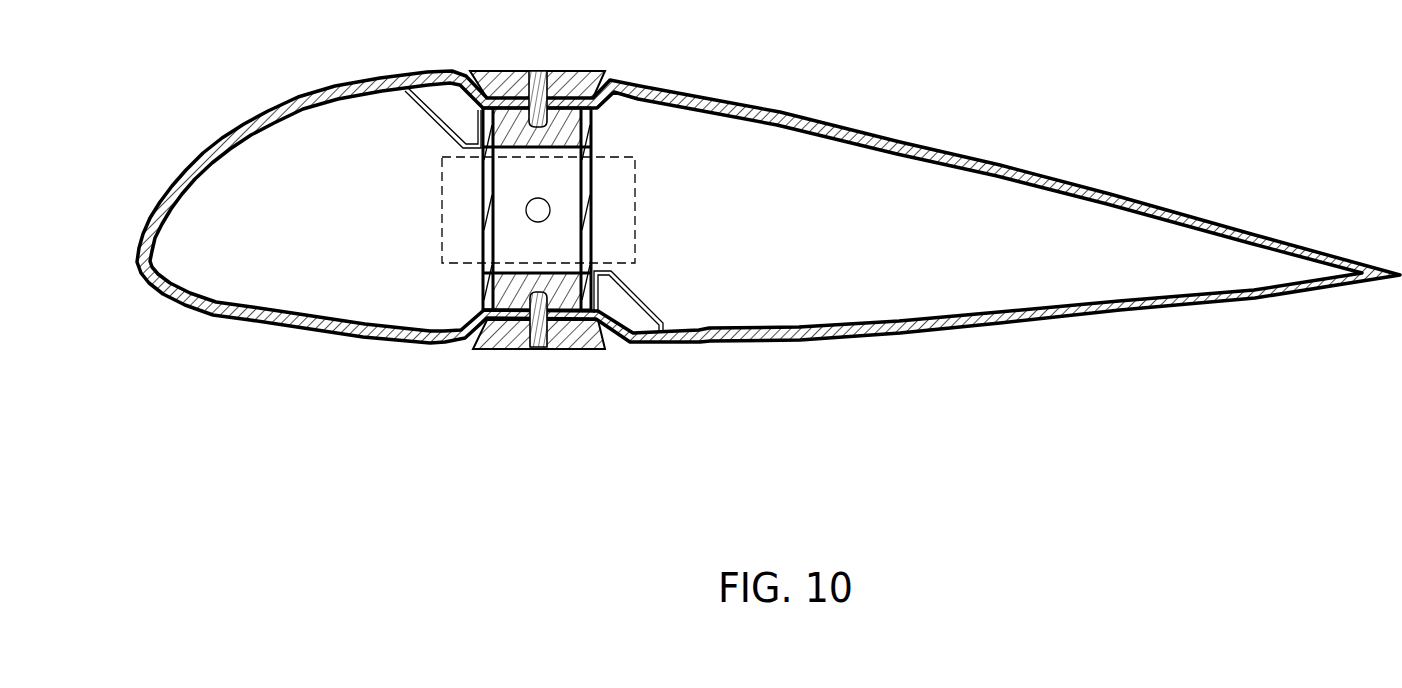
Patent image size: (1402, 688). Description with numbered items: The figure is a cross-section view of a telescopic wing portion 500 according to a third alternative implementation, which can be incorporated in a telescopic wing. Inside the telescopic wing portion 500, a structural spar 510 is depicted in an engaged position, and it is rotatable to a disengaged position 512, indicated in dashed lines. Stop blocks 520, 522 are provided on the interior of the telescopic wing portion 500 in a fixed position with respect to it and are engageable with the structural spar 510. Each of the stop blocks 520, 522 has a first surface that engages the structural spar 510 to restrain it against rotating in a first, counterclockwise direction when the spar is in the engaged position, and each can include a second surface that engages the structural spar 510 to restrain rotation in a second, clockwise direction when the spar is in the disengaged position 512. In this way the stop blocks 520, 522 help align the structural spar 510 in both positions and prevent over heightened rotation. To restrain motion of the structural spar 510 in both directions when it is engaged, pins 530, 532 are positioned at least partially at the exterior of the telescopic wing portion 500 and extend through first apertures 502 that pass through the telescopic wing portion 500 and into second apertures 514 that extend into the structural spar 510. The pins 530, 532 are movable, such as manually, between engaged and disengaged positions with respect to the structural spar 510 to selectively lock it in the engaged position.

The telescopic wing portion 500 is at (864, 121).
The first apertures 502 is at (537, 94).
The structural spar 510 is at (593, 135).
The disengaged position 512 is at (637, 237).
The second apertures 514 is at (500, 299).
The stop block 520 is at (445, 121).
The stop block 522 is at (648, 310).
The pin 530 is at (497, 72).
The pin 532 is at (603, 350).